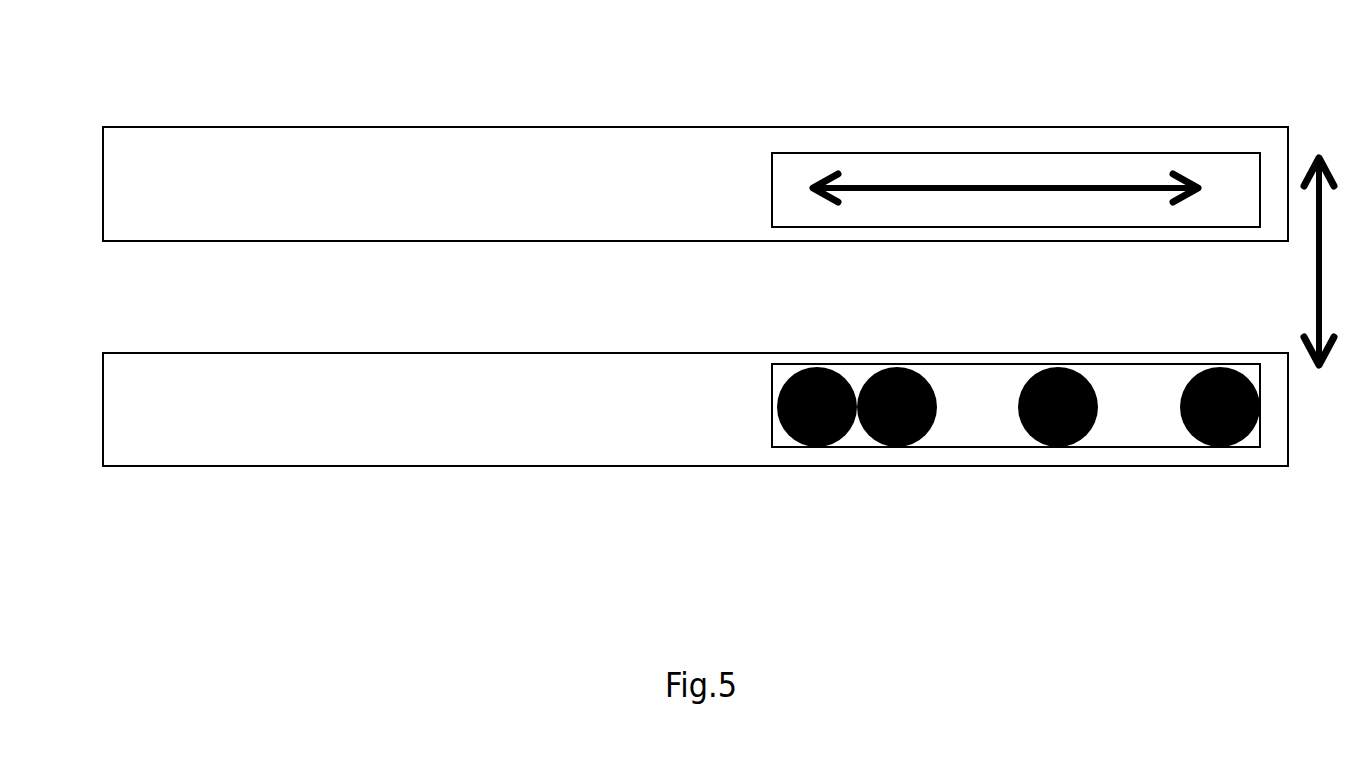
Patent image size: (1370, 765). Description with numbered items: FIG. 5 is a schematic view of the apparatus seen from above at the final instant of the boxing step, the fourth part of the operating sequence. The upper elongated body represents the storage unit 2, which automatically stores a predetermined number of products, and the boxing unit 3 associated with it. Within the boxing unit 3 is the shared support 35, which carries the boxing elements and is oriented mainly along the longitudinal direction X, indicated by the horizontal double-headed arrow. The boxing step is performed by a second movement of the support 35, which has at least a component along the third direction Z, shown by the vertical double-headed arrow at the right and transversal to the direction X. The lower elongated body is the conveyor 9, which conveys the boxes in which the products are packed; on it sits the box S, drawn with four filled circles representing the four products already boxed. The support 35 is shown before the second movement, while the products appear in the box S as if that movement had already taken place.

The storage unit 2 is at (560, 126).
The boxing unit 3 is at (1024, 144).
The shared support 35 is at (1051, 153).
The conveyor 9 is at (359, 466).
The box S is at (782, 445).
The longitudinal direction X is at (920, 185).
The third direction Z is at (1316, 204).